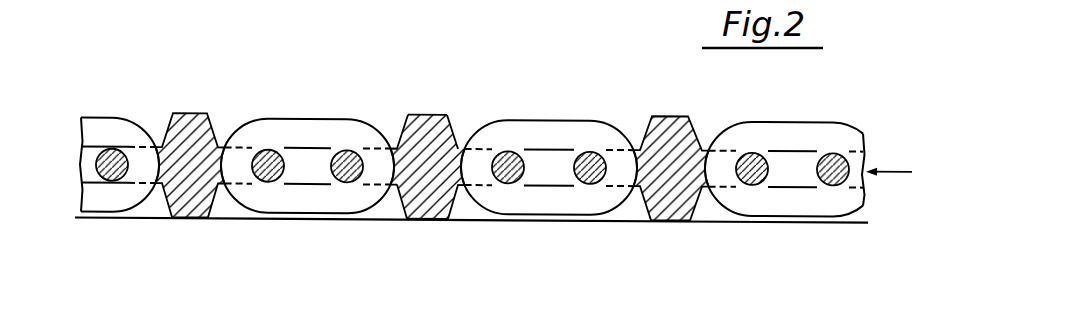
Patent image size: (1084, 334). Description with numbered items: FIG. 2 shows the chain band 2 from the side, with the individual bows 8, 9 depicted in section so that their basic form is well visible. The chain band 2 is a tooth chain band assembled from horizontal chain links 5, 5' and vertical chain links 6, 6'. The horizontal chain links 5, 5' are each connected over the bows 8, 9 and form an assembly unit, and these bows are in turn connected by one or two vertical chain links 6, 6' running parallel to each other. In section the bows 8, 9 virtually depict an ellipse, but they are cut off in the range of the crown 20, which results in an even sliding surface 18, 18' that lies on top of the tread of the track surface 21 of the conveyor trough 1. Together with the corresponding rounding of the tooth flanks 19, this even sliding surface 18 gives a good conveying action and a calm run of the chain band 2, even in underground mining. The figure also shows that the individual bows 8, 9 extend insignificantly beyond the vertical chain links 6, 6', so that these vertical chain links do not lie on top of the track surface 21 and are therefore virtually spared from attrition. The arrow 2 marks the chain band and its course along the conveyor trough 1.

The conveyor trough 1 is at (232, 222).
The chain band 2 is at (899, 174).
The horizontal chain link 5 is at (594, 228).
The horizontal chain link 5' is at (388, 227).
The vertical chain link 6 is at (549, 212).
The vertical chain link 6' is at (307, 121).
The bow 8 is at (182, 172).
The bow 9 is at (427, 166).
The sliding surface 18 is at (427, 261).
The sliding surface 18' is at (432, 74).
The tooth flank 19 is at (453, 123).
The crown 20 is at (411, 114).
The track surface 21 is at (383, 212).